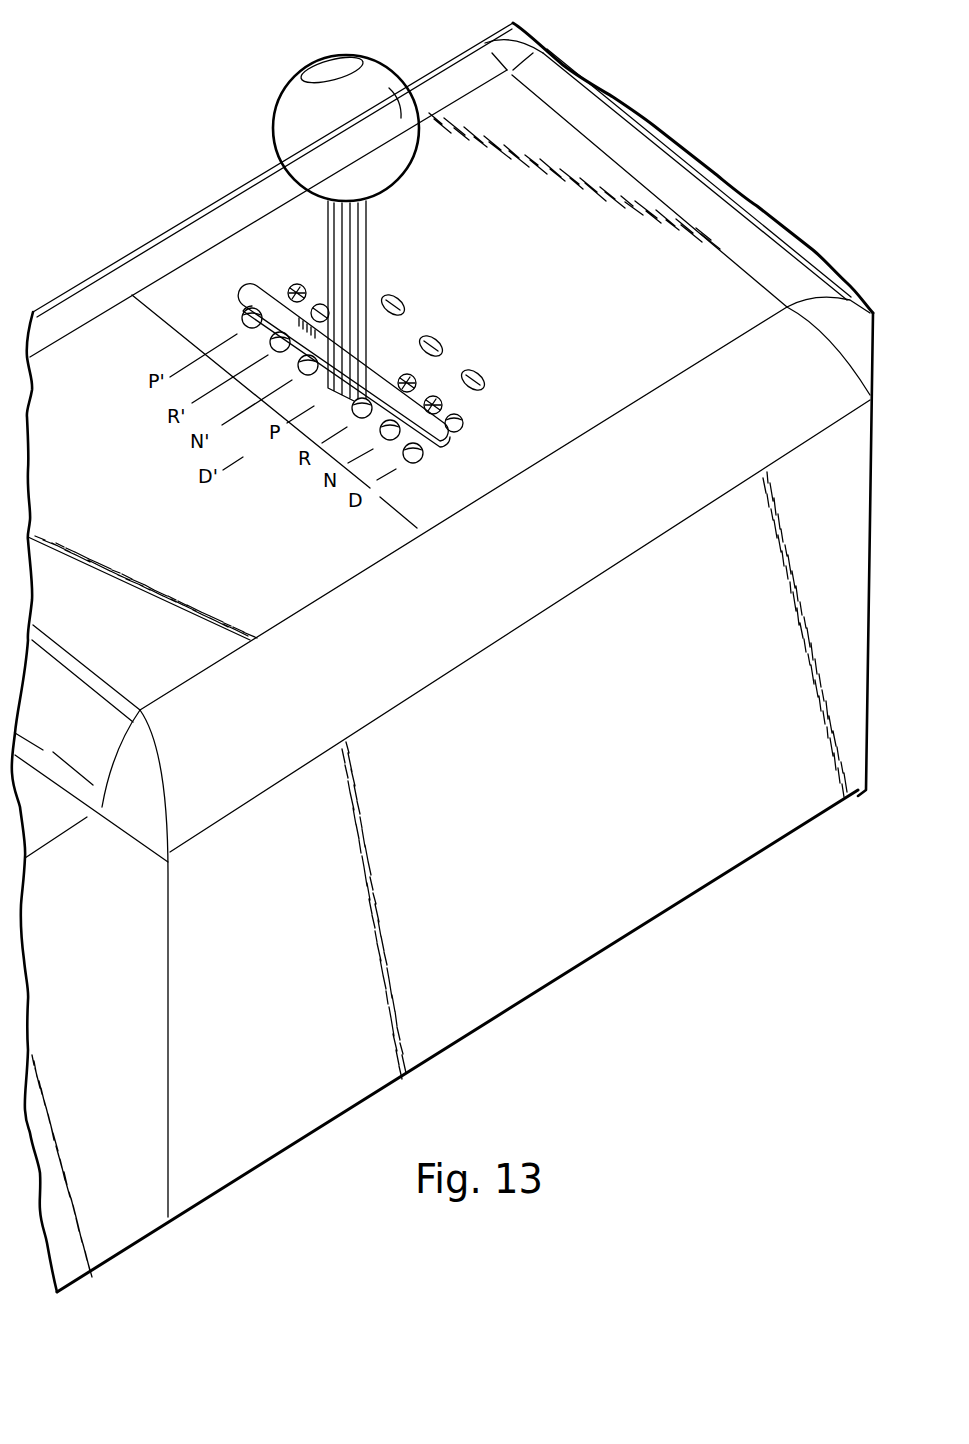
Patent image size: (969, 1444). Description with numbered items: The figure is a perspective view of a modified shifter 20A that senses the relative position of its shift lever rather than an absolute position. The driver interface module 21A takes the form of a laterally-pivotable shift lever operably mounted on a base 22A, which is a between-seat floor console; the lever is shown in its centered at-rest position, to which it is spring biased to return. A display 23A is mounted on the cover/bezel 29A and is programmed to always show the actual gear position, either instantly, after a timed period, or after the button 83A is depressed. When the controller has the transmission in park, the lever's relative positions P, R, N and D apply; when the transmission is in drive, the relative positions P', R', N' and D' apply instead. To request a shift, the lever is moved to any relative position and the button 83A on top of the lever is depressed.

The modified shifter 20A is at (162, 170).
The driver interface module 21A is at (450, 455).
The base 22A is at (540, 940).
The display 23A is at (516, 300).
The cover/bezel 29A is at (650, 377).
The button 83A is at (318, 67).